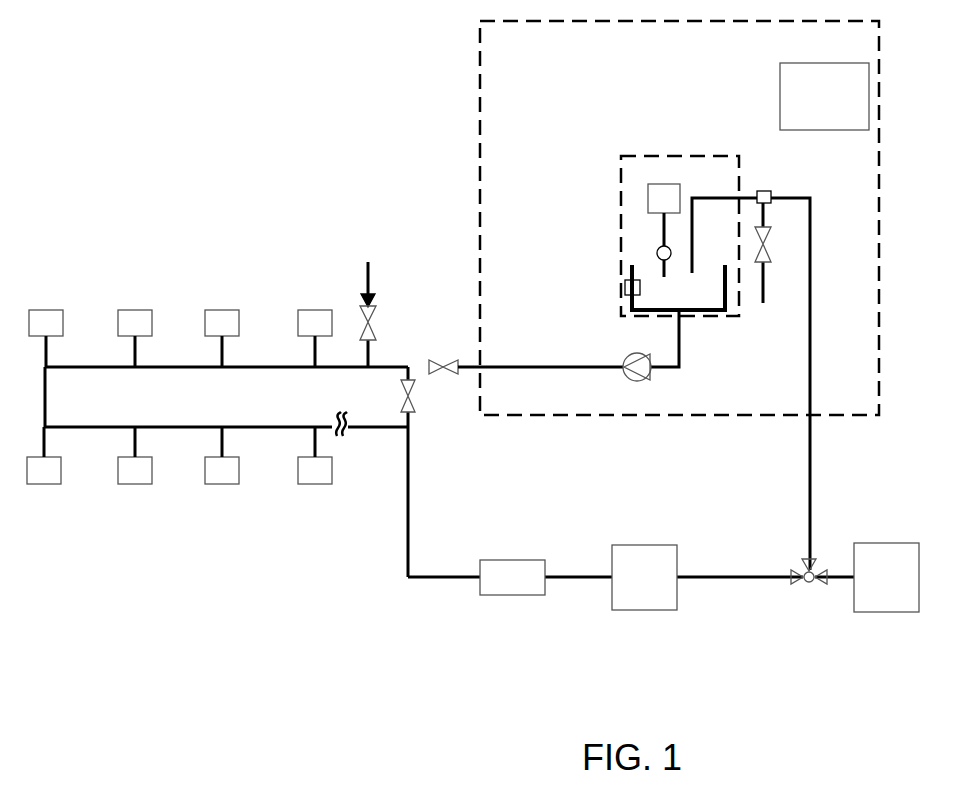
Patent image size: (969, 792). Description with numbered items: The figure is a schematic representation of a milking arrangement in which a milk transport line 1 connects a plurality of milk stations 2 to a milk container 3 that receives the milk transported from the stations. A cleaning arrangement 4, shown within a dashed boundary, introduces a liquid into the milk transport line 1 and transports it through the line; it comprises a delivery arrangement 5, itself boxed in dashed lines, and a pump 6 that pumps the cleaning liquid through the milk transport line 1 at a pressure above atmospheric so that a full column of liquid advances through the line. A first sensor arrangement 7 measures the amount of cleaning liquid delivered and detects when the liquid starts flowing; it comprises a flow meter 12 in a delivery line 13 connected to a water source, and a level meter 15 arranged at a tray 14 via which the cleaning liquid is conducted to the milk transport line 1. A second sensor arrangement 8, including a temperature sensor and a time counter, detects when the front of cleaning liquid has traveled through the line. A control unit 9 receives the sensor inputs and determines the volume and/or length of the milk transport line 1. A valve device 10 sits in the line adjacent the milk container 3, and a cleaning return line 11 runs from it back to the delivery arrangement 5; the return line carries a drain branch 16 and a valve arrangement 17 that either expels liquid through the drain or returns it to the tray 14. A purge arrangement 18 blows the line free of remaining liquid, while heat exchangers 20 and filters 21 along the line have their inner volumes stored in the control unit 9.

The milk transport line 1 is at (192, 427).
The milk stations 2 is at (135, 310).
The milk container 3 is at (887, 612).
The cleaning arrangement 4 is at (476, 81).
The delivery arrangement 5 is at (618, 156).
The pump 6 is at (640, 370).
The first sensor arrangement 7 is at (565, 213).
The second sensor arrangement 8 is at (768, 192).
The control unit 9 is at (780, 97).
The valve device 10 is at (808, 588).
The cleaning return line 11 is at (810, 503).
The flow meter 12 is at (657, 254).
The delivery line 13 is at (662, 221).
The tray 14 is at (708, 313).
The level meter 15 is at (624, 287).
The drain branch 16 is at (768, 286).
The valve arrangement 17 is at (768, 245).
The purge arrangement 18 is at (362, 325).
The heat exchangers 20 is at (645, 545).
The filters 21 is at (513, 560).